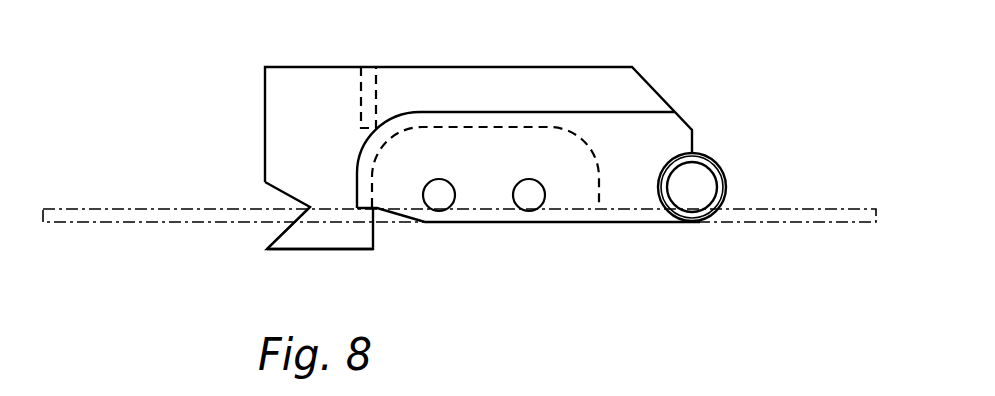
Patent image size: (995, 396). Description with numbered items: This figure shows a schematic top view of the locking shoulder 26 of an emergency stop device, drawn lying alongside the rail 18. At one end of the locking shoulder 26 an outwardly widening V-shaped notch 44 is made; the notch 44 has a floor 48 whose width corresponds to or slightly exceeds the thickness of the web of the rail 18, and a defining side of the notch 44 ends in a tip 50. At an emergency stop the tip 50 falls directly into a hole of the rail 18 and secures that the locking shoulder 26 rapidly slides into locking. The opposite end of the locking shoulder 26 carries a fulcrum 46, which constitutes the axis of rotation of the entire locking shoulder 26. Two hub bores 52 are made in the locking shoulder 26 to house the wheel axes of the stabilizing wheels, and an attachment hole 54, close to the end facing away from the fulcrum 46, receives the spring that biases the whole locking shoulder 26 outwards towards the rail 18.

The rail 18 is at (116, 210).
The locking shoulder 26 is at (274, 112).
The V-shaped notch 44 is at (265, 198).
The fulcrum 46 is at (693, 205).
The floor 48 is at (312, 210).
The tip 50 is at (288, 245).
The hub bores 52 is at (435, 205).
The attachment hole 54 is at (377, 68).